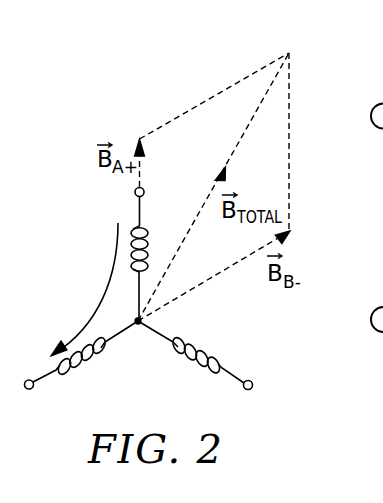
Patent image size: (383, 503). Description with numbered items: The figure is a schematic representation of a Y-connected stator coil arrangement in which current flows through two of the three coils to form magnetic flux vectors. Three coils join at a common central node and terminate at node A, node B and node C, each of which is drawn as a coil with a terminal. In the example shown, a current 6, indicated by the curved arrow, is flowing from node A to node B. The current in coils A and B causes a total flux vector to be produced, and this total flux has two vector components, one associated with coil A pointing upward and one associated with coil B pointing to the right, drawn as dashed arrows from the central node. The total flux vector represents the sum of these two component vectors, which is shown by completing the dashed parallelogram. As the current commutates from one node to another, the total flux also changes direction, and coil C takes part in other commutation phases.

The current 6 is at (102, 298).
The node A is at (131, 224).
The node B is at (105, 384).
The node C is at (177, 384).